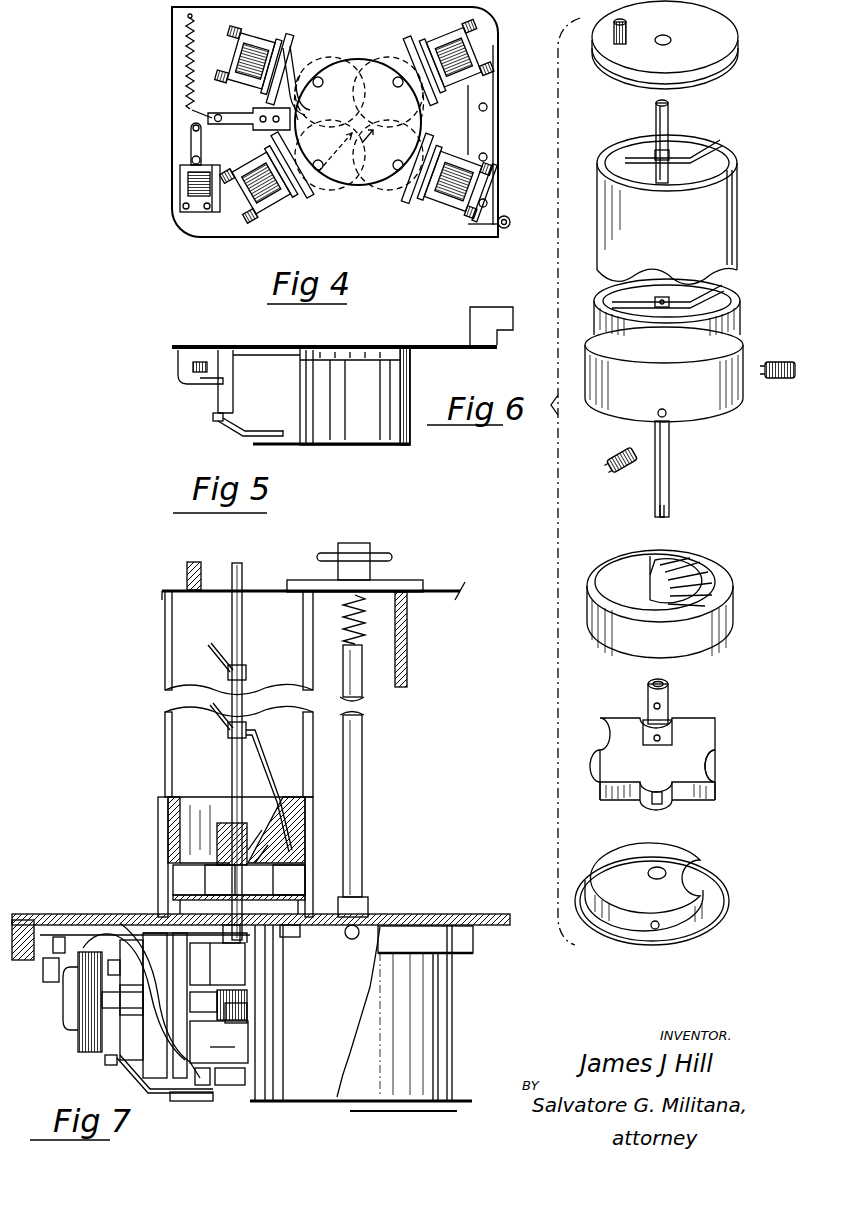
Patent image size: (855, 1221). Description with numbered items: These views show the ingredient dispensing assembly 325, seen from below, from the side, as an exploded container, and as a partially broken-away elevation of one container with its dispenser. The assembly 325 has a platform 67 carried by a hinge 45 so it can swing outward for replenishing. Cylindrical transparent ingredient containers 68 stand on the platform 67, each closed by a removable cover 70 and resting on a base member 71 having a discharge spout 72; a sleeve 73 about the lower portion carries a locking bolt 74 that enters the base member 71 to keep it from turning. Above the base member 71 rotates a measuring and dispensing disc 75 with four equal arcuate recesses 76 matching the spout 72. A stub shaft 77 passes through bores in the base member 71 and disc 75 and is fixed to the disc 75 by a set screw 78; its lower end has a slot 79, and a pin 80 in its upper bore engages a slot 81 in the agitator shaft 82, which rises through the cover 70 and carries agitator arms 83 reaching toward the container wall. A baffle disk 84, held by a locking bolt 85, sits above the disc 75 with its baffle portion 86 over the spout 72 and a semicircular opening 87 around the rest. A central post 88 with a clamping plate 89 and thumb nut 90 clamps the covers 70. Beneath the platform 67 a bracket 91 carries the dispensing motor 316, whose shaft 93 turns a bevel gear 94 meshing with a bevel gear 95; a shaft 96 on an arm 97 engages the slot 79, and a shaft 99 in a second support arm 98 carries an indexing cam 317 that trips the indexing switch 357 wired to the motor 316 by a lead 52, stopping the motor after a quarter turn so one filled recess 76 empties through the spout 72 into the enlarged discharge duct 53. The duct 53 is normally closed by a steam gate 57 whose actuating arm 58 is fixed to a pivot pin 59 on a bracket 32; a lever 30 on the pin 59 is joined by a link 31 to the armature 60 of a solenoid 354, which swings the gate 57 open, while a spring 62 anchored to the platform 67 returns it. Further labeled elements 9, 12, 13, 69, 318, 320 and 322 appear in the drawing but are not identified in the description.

In FIG. 4, the spring anchor 9 is at (195, 24).
In FIG. 4, the rotation arrow 12 is at (348, 141).
In FIG. 4, the rotary disc 13 is at (228, 232).
In FIG. 4, the second lever 30 is at (205, 118).
In FIG. 4, the link 31 is at (191, 145).
In FIG. 5, the bracket 32 is at (233, 393).
In FIG. 5, the hinge 45 is at (513, 315).
In FIG. 7, the lead 52 is at (150, 1000).
In FIG. 5, the enlarged discharge duct 53 is at (410, 384).
In FIG. 7, the enlarged discharge duct 53 is at (455, 1000).
In FIG. 4, the steam gate 57 is at (422, 132).
In FIG. 5, the steam gate 57 is at (378, 447).
In FIG. 7, the steam gate 57 is at (375, 1110).
In FIG. 4, the actuating arm 58 is at (243, 125).
In FIG. 5, the actuating arm 58 is at (245, 432).
In FIG. 7, the actuating arm 58 is at (140, 1083).
In FIG. 4, the pivot pin 59 is at (217, 113).
In FIG. 5, the pivot pin 59 is at (216, 422).
In FIG. 7, the pivot pin 59 is at (105, 1062).
In FIG. 4, the armature 60 is at (191, 162).
In FIG. 4, the spring 62 is at (188, 62).
In FIG. 4, the platform 67 is at (438, 228).
In FIG. 7, the platform 67 is at (425, 914).
In FIG. 6, the ingredient container 68 is at (737, 215).
In FIG. 7, the ingredient container 68 is at (165, 742).
In FIG. 6, the shaft 69 is at (669, 120).
In FIG. 6, the removable cover 70 is at (727, 42).
In FIG. 7, the removable cover 70 is at (255, 590).
In FIG. 6, the base member 71 is at (610, 850).
In FIG. 7, the base member 71 is at (175, 895).
In FIG. 6, the discharge spout 72 is at (715, 890).
In FIG. 7, the discharge spout 72 is at (292, 927).
In FIG. 6, the sleeve 73 is at (745, 345).
In FIG. 7, the sleeve 73 is at (158, 820).
In FIG. 6, the locking bolt 74 is at (622, 470).
In FIG. 6, the measuring and dispensing disc 75 is at (708, 805).
In FIG. 7, the measuring and dispensing disc 75 is at (173, 880).
In FIG. 6, the arcuate recesses 76 is at (603, 755).
In FIG. 7, the arcuate recesses 76 is at (289, 880).
In FIG. 6, the stub shaft 77 is at (668, 690).
In FIG. 7, the stub shaft 77 is at (232, 882).
In FIG. 7, the set screw 78 is at (300, 858).
In FIG. 6, the slot 79 is at (662, 805).
In FIG. 6, the pin 80 is at (663, 706).
In FIG. 6, the slot 81 is at (656, 512).
In FIG. 6, the agitator shaft 82 is at (670, 462).
In FIG. 7, the agitator shaft 82 is at (243, 650).
In FIG. 6, the agitator arms 83 is at (700, 150).
In FIG. 7, the agitator arms 83 is at (228, 672).
In FIG. 6, the baffle disk 84 is at (733, 606).
In FIG. 7, the baffle disk 84 is at (207, 797).
In FIG. 6, the locking bolt 85 is at (782, 378).
In FIG. 6, the baffle portion 86 is at (715, 585).
In FIG. 7, the baffle portion 86 is at (305, 830).
In FIG. 6, the semicircular opening 87 is at (630, 600).
In FIG. 7, the post 88 is at (363, 773).
In FIG. 7, the clamping plate 89 is at (398, 580).
In FIG. 7, the thumb nut 90 is at (368, 548).
In FIG. 7, the bracket 91 is at (182, 960).
In FIG. 4, the motor shaft 93 is at (286, 50).
In FIG. 7, the motor shaft 93 is at (150, 1010).
In FIG. 7, the bevel gear 94 is at (219, 1042).
In FIG. 7, the bevel gear 95 is at (248, 997).
In FIG. 7, the shaft 96 is at (250, 940).
In FIG. 7, the arm 97 is at (221, 964).
In FIG. 7, the second support arm 98 is at (222, 1055).
In FIG. 7, the shaft 99 is at (243, 1012).
In FIG. 4, the dispensing motor 316 is at (265, 213).
In FIG. 7, the dispensing motor 316 is at (70, 1005).
In FIG. 7, the indexing cam 317 is at (222, 1085).
In FIG. 4, the motor 318 is at (485, 48).
In FIG. 4, the motor 320 is at (478, 176).
In FIG. 4, the motor 322 is at (236, 60).
In FIG. 4, the ingredient dispensing assembly 325 is at (167, 48).
In FIG. 4, the solenoid 354 is at (182, 190).
In FIG. 5, the solenoid 354 is at (198, 360).
In FIG. 7, the solenoid 354 is at (25, 960).
In FIG. 7, the motor indexing switch 357 is at (202, 1085).